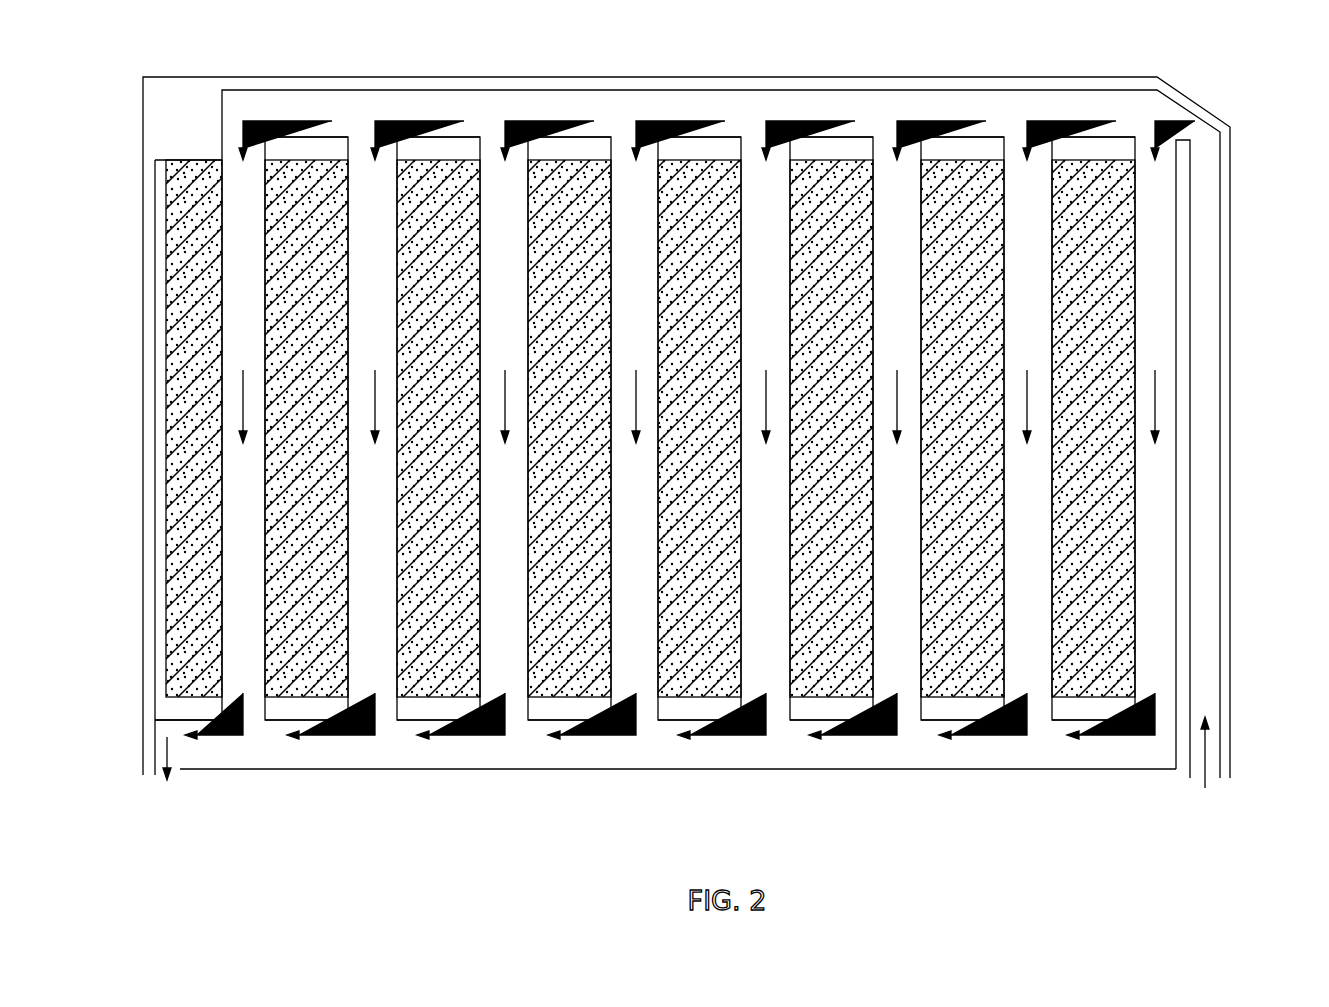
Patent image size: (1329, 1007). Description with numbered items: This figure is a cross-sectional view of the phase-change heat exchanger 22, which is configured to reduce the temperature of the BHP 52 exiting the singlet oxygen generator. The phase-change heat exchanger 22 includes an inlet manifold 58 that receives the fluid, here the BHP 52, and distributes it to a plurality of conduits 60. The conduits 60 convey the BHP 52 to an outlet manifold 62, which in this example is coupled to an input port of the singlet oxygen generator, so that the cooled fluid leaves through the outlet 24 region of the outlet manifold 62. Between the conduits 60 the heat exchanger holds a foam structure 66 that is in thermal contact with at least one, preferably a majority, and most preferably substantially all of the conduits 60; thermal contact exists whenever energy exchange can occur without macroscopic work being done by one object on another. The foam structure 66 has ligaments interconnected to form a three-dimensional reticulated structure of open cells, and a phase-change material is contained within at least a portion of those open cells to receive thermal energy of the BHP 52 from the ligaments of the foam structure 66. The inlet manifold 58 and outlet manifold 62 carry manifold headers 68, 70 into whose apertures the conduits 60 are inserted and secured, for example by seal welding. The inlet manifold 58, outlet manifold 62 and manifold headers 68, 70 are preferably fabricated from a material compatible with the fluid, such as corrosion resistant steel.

The phase-change heat exchanger 22 is at (674, 833).
The coolant outlet 24 is at (167, 775).
The BHP 52 is at (1198, 479).
The inlet manifold 58 is at (1230, 113).
The conduits 60 is at (229, 311).
The outlet manifold 62 is at (130, 747).
The foam structure 66 is at (180, 351).
The manifold header 68 is at (338, 147).
The manifold header 70 is at (210, 712).